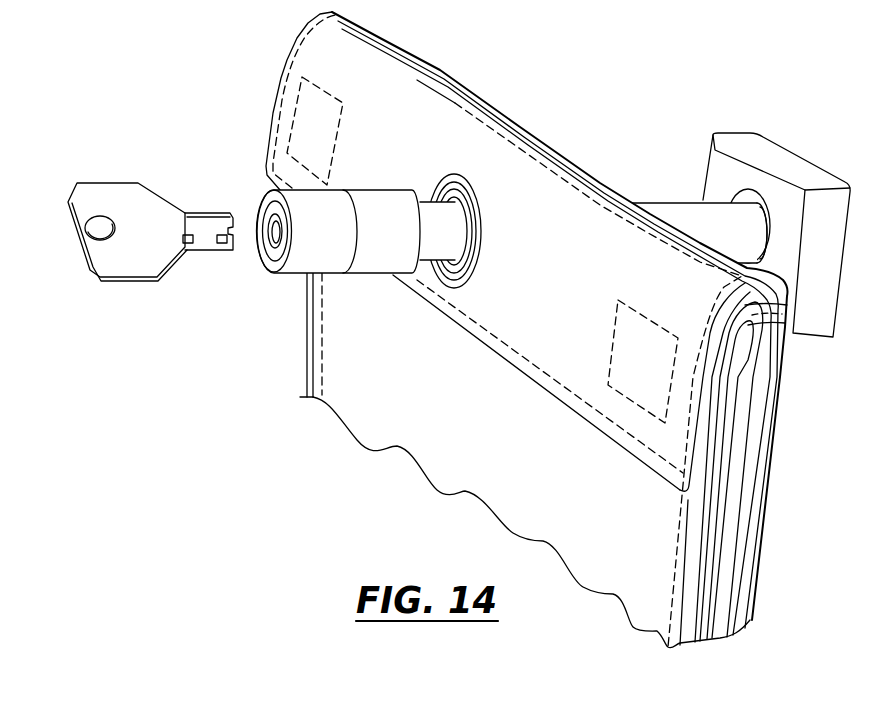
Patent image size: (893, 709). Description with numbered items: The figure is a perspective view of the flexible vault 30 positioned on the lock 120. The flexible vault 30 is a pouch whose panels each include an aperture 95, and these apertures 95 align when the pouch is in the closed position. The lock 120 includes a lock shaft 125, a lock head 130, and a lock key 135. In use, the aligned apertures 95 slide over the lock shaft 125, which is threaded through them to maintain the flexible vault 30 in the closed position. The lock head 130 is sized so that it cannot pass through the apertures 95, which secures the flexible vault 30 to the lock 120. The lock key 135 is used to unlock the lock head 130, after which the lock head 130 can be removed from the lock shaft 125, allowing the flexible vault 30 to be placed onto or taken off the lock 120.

The flexible vault 30 is at (522, 97).
The aperture 95 is at (435, 258).
The lock 120 is at (332, 251).
The lock shaft 125 is at (702, 218).
The lock head 130 is at (306, 250).
The lock key 135 is at (128, 255).